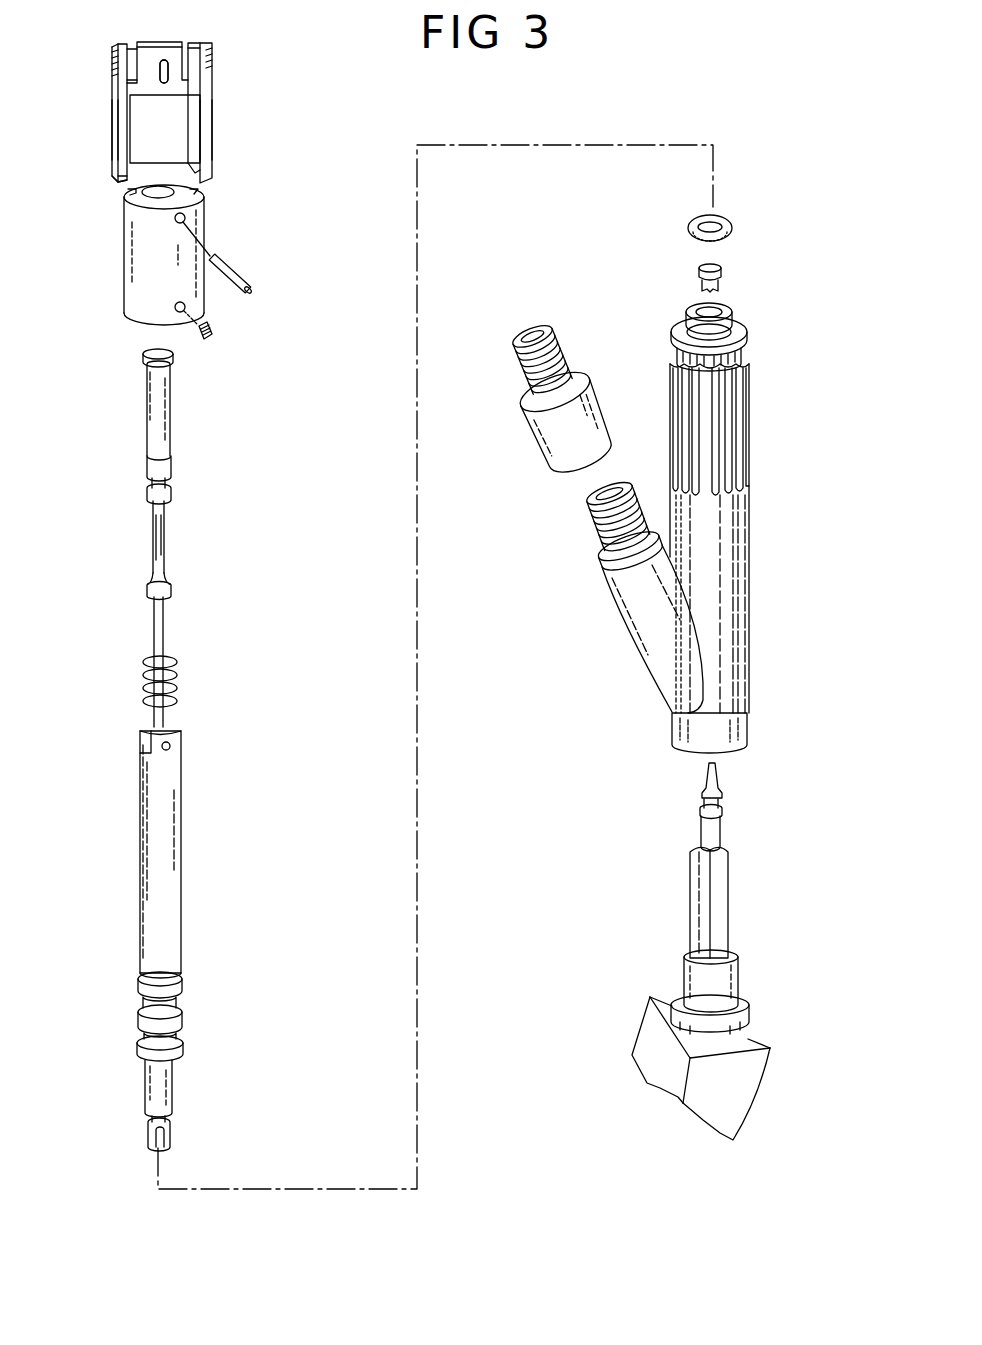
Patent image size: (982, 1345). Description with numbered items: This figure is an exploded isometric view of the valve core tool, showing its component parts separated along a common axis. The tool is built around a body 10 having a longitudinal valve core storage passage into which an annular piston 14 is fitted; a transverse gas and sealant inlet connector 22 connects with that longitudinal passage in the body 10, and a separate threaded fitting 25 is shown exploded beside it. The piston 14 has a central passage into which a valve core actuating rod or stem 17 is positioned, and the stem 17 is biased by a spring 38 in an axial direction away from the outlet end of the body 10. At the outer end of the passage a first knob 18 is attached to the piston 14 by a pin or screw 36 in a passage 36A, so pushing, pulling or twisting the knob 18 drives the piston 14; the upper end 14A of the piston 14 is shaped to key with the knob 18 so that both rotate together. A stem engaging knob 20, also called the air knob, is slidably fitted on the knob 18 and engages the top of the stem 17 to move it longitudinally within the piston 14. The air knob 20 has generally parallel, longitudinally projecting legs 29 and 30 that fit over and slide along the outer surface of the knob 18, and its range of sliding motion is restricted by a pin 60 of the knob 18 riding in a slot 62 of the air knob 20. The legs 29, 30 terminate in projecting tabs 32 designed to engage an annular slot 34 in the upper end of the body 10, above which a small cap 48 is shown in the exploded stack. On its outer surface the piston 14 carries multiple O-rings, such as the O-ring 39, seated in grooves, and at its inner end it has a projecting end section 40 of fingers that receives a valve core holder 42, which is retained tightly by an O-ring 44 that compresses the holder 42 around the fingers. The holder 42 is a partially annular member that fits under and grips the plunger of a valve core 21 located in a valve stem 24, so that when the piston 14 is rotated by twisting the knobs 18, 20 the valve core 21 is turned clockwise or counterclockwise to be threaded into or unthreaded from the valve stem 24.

The body 10 is at (752, 505).
The annular piston 14 is at (183, 783).
The upper end of piston 14A is at (140, 735).
The valve core actuating rod or stem 17 is at (173, 435).
The first knob 18 is at (203, 209).
The stem engaging knob 20 is at (208, 92).
The valve core 21 is at (723, 807).
The gas and sealant inlet connector 22 is at (633, 632).
The valve stem 24 is at (728, 902).
The threaded nut 25 is at (553, 432).
The leg 29 is at (208, 162).
The leg 30 is at (113, 161).
The projecting tab 32 is at (122, 186).
The annular slot 34 is at (750, 347).
The pin or screw 36 is at (212, 332).
The passage 36A is at (168, 743).
The spring 38 is at (177, 682).
The O-ring 39 is at (183, 977).
The projecting end section 40 is at (149, 1101).
The valve core holder 42 is at (697, 275).
The O-ring 44 is at (733, 225).
The cap 48 is at (735, 312).
The pin 60 is at (238, 277).
The slot 62 is at (174, 82).